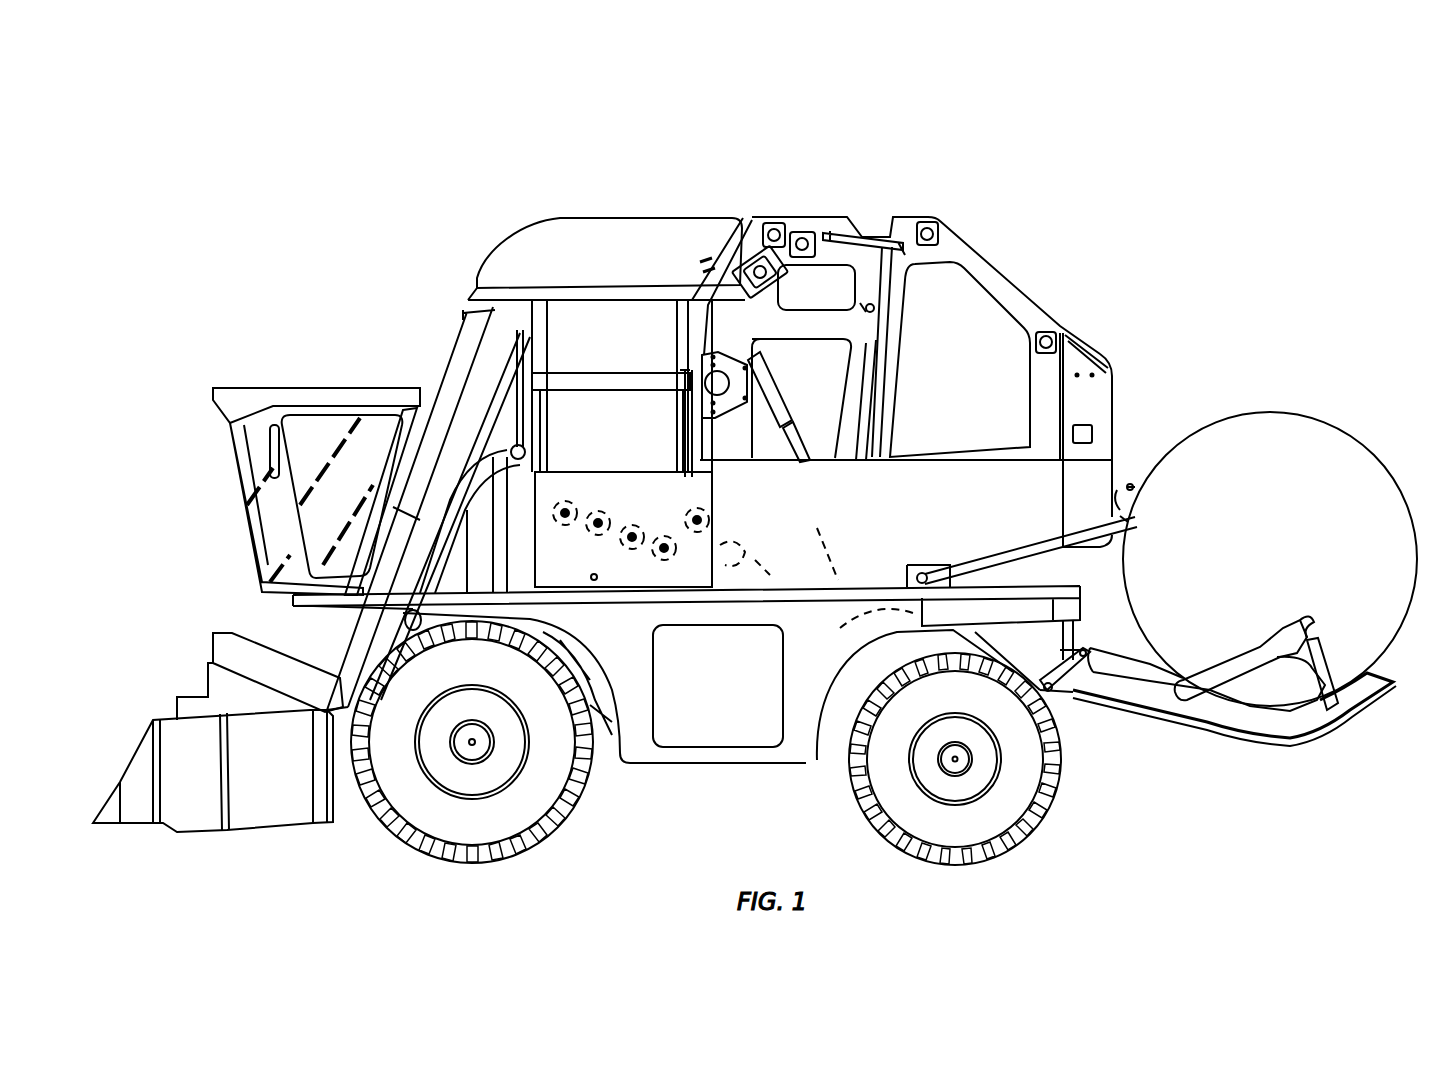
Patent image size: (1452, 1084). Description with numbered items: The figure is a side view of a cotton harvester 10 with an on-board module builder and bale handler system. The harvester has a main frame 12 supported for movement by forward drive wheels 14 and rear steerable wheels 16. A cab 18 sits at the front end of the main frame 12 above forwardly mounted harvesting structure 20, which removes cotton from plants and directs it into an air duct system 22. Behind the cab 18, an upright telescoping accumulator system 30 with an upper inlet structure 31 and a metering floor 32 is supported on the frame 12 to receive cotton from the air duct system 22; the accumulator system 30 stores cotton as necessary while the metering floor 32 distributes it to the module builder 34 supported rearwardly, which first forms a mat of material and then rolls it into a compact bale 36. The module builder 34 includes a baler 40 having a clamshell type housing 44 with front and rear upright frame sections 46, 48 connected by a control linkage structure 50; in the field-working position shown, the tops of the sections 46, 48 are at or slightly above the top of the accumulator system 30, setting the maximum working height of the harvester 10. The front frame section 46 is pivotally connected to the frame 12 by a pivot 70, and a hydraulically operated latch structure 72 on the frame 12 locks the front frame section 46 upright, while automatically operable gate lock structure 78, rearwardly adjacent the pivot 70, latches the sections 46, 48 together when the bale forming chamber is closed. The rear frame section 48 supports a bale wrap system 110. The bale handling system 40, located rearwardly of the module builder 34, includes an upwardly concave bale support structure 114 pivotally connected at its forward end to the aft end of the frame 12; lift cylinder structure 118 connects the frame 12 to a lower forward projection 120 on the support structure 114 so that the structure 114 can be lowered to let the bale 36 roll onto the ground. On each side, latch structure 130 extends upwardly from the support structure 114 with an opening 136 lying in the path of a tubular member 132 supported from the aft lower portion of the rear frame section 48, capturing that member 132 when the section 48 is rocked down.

The cotton harvester 10 is at (1150, 287).
The main frame 12 is at (783, 590).
The forward drive wheels 14 is at (560, 812).
The rear steerable wheels 16 is at (1046, 818).
The cab 18 is at (383, 388).
The harvesting structure 20 is at (133, 722).
The air duct system 22 is at (318, 643).
The accumulator system 30 is at (591, 230).
The upper inlet structure 31 is at (507, 250).
The metering floor 32 is at (664, 548).
The module builder 34 is at (745, 213).
The bale 36 is at (1332, 425).
The bale handling system 40 is at (895, 210).
The clamshell housing 44 is at (1027, 262).
The front frame section 46 is at (762, 320).
The rear frame section 48 is at (950, 517).
The control linkage structure 50 is at (853, 226).
The pivot 70 is at (779, 538).
The latch structure 72 is at (747, 605).
The gate lock structure 78 is at (866, 545).
The bale wrap system 110 is at (1103, 398).
The bale support structure 114 is at (1228, 712).
The lift cylinder structure 118 is at (994, 650).
The lower forward projection 120 is at (1077, 690).
The latch structure 130 is at (1275, 632).
The tubular member 132 is at (857, 635).
The opening 136 is at (1312, 620).